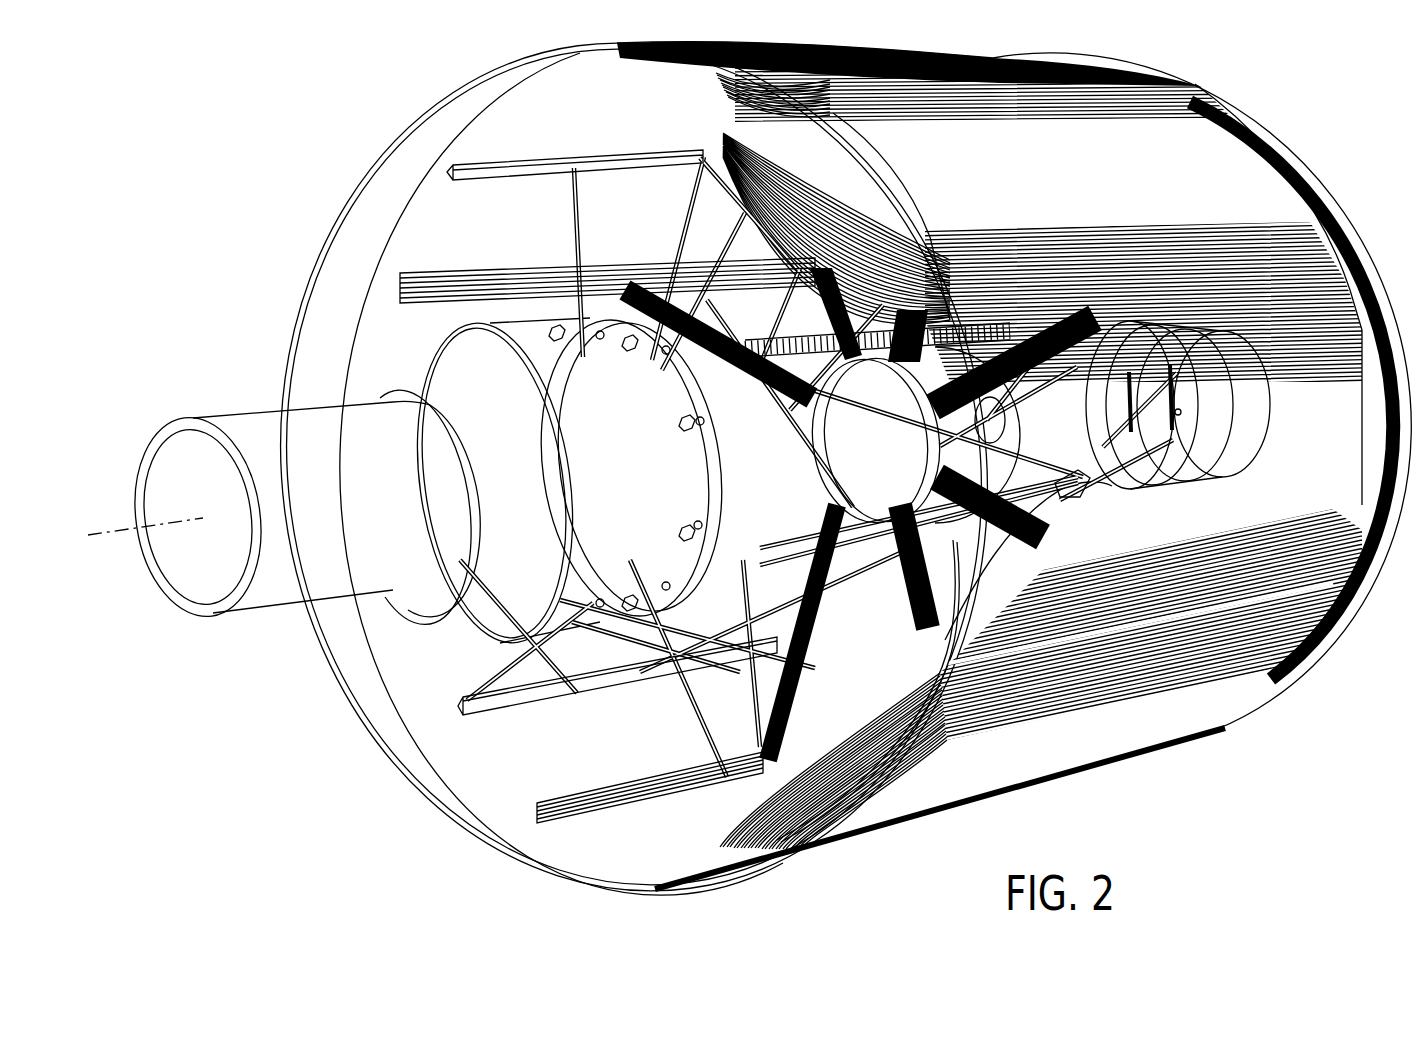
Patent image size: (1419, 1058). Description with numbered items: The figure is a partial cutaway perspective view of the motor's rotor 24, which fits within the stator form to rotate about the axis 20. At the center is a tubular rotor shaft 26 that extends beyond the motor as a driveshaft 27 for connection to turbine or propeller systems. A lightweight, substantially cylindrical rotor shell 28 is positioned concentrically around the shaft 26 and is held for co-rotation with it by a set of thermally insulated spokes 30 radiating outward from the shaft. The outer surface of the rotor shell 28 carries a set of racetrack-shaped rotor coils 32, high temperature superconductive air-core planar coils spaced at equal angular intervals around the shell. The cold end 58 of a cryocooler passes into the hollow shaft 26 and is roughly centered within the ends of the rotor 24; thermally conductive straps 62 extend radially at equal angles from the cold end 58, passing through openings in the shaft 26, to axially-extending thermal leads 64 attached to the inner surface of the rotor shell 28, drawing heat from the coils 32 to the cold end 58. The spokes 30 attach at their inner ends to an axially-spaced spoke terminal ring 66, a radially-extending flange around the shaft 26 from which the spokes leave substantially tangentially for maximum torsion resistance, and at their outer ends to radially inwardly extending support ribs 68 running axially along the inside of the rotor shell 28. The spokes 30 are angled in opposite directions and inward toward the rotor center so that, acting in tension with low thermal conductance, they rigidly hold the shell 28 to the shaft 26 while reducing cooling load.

The axis 20 is at (113, 533).
The rotor 24 is at (219, 299).
The tubular rotor shaft 26 is at (603, 530).
The driveshaft 27 is at (245, 425).
The rotor shell 28 is at (800, 140).
The thermally insulated spokes 30 is at (781, 433).
The rotor coils 32 is at (867, 100).
The cold end 58 is at (842, 425).
The thermally conductive straps 62 is at (1030, 511).
The thermal leads 64 is at (493, 283).
The spoke terminal ring 66 is at (660, 360).
The support ribs 68 is at (523, 167).